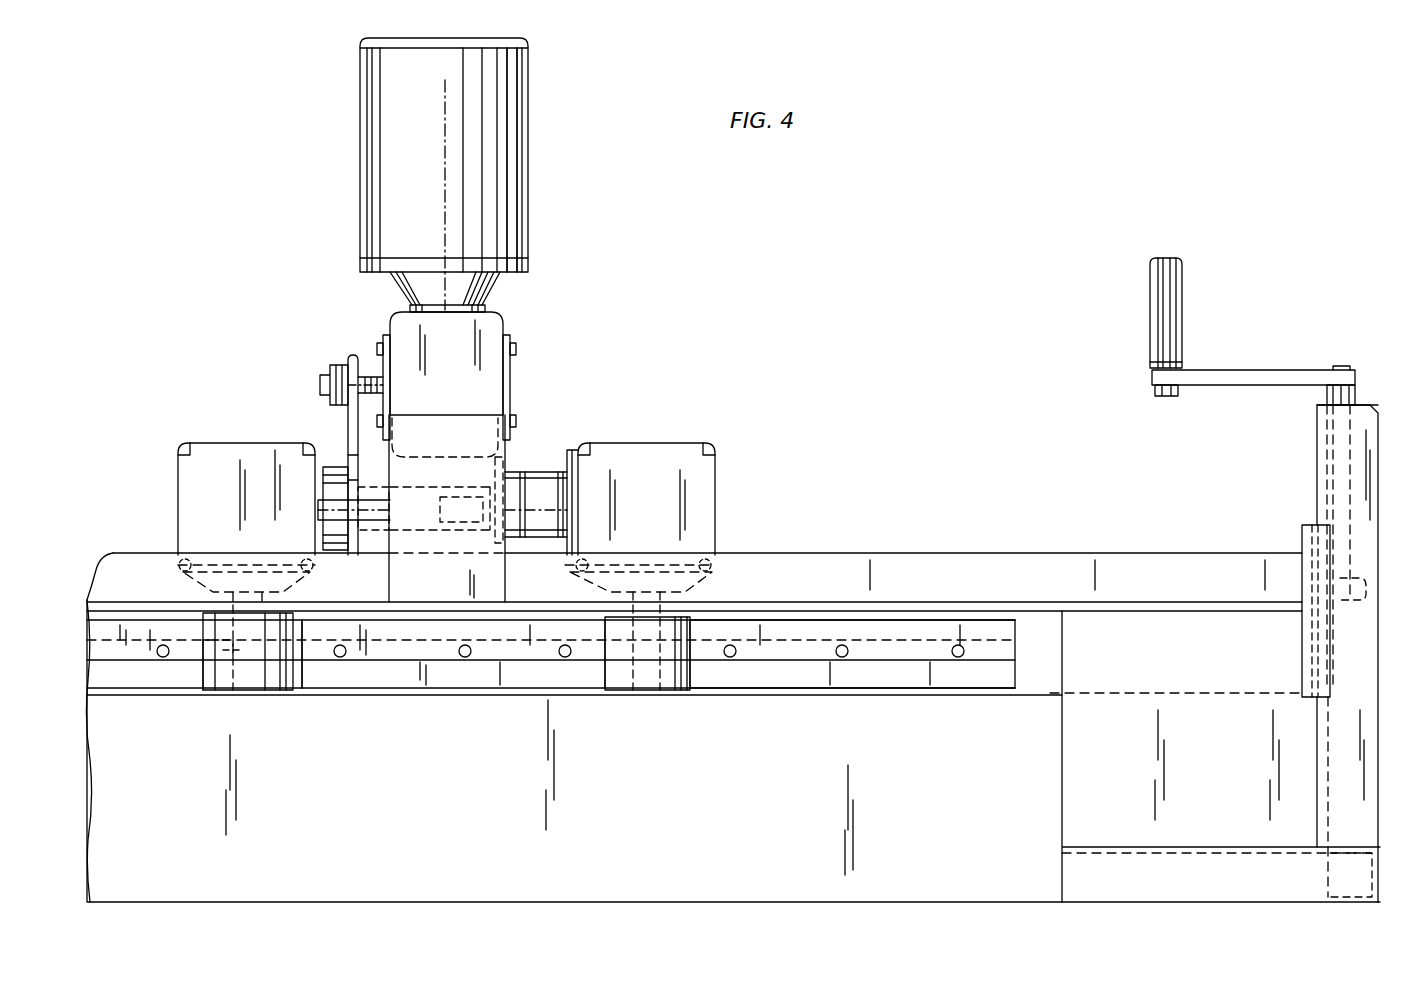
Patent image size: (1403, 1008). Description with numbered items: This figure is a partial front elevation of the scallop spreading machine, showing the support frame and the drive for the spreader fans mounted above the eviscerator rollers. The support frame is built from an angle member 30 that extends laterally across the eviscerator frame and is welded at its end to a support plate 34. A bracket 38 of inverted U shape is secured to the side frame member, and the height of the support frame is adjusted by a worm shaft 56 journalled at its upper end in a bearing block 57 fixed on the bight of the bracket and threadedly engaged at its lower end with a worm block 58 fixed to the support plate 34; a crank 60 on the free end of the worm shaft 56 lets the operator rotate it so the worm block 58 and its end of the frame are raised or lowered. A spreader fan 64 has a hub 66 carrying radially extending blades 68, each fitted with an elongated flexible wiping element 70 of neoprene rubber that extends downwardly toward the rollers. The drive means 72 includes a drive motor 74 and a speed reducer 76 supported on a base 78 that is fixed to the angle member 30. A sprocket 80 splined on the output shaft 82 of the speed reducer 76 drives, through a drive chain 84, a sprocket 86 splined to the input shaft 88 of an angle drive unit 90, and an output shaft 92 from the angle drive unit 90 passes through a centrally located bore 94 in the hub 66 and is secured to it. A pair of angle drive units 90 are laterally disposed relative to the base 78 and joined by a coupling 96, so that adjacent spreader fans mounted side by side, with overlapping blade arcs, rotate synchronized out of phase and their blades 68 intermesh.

The angle member 30 is at (1203, 562).
The support plate 34 is at (1318, 660).
The bracket 38 is at (1382, 405).
The worm shaft 56 is at (1345, 460).
The bearing block 57 is at (1325, 397).
The worm block 58 is at (1355, 600).
The crank 60 is at (1242, 375).
The spreader fan 64 is at (708, 617).
The hub 66 is at (615, 620).
The blade 68 is at (413, 650).
The flexible wiping element 70 is at (312, 685).
The drive means 72 is at (352, 193).
The drive motor 74 is at (520, 138).
The speed reducer 76 is at (447, 358).
The base 78 is at (510, 468).
The sprocket 80 is at (345, 372).
The output shaft 82 is at (373, 372).
The drive chain 84 is at (350, 430).
The sprocket 86 is at (385, 514).
The input shaft 88 is at (375, 487).
The angle drive unit 90 is at (220, 445).
The output shaft 92 is at (205, 620).
The bore 94 is at (205, 650).
The coupling 96 is at (478, 497).